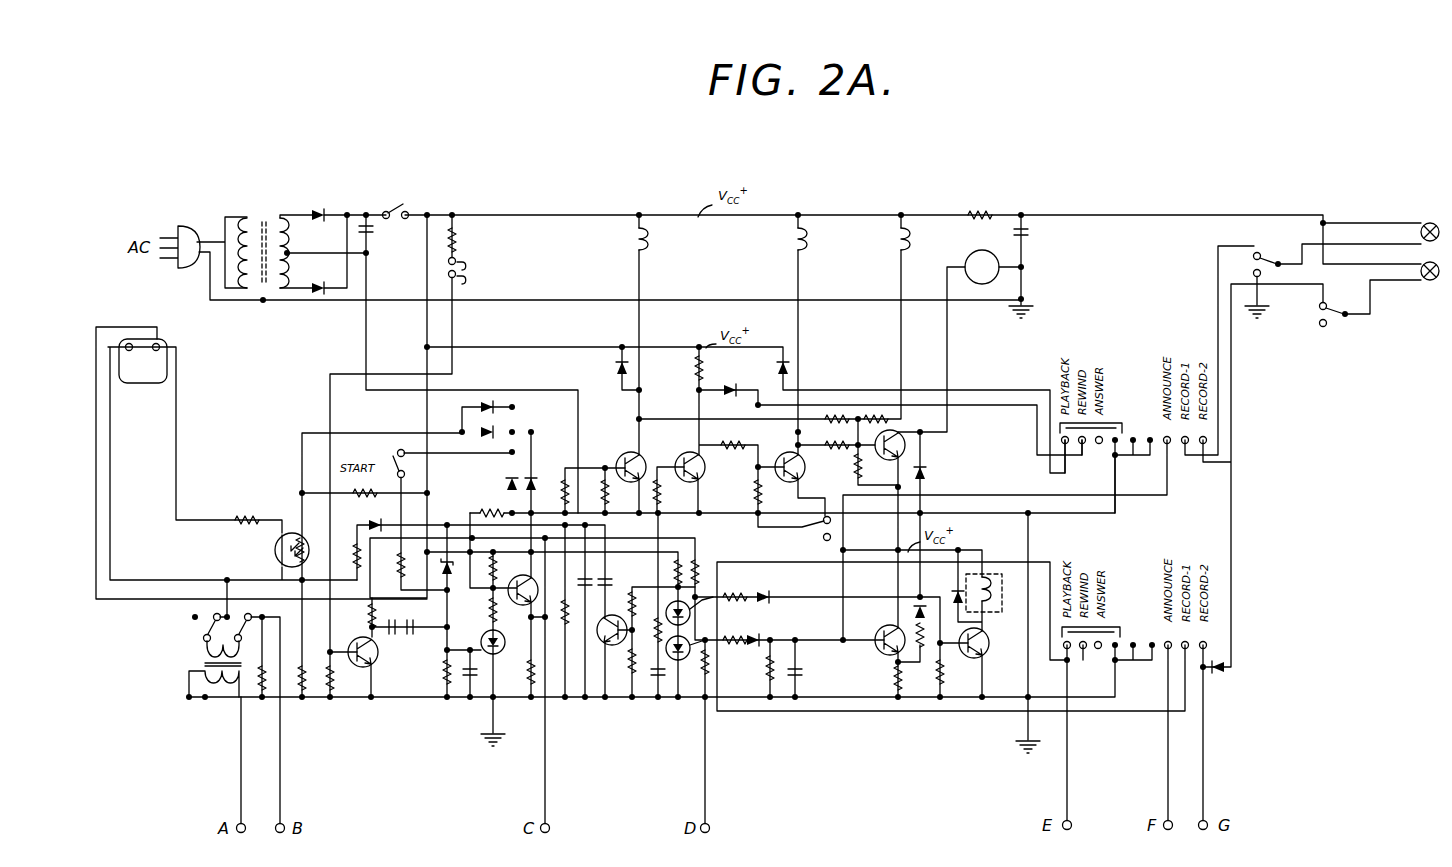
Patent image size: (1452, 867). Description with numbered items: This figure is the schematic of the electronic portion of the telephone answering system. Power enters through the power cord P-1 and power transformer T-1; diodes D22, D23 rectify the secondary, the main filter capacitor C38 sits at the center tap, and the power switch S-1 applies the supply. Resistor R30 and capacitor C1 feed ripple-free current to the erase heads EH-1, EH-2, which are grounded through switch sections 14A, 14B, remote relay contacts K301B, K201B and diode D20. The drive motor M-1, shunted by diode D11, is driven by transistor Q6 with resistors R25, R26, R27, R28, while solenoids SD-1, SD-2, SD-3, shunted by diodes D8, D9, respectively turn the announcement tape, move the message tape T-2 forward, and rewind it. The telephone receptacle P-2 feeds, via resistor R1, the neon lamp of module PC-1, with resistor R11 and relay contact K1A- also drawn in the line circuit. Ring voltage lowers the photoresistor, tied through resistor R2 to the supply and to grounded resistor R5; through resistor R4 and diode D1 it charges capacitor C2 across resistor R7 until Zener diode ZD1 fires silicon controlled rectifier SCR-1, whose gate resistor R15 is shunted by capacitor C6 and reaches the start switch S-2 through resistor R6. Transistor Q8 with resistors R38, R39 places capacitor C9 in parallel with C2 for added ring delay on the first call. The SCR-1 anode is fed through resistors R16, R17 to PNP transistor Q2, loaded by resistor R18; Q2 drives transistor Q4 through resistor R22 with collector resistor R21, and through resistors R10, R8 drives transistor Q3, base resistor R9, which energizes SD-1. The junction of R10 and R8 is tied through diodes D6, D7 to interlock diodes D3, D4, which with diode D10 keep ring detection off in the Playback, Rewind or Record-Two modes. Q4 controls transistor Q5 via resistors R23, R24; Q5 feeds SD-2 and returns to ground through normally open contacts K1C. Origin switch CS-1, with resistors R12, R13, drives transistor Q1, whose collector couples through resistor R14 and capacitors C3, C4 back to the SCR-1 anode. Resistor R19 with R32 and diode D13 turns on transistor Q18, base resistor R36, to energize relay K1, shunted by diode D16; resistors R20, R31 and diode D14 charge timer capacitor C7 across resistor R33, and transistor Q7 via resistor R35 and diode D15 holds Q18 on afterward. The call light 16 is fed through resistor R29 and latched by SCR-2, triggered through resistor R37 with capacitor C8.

The power cord P-1 is at (204, 230).
The power transformer T-1 is at (263, 243).
The diode D22 is at (316, 204).
The diode D23 is at (313, 280).
The power switch S-1 is at (395, 200).
The filter capacitor C38 is at (372, 234).
The resistor R12 is at (458, 240).
The switch CS-1 is at (473, 268).
The control solenoid SD-1 is at (647, 241).
The solenoid SD-2 is at (806, 241).
The rewind solenoid SD-3 is at (909, 241).
The resistor R30 is at (978, 212).
The filter capacitor C1 is at (1030, 239).
The drive motor M-1 is at (982, 267).
The remote control relay contact K301B is at (1279, 252).
The remote control relay contact K201B is at (1345, 324).
The erase head EH-1 is at (1423, 222).
The erase head EH-2 is at (1427, 281).
The telephone receptacle P-2 is at (132, 339).
The diode D8 is at (615, 378).
The resistor R21 is at (693, 378).
The diode D10 is at (725, 383).
The diode D9 is at (778, 373).
The resistor R28 is at (874, 412).
The resistor R25 is at (837, 423).
The resistor R26 is at (837, 448).
The resistor R27 is at (852, 475).
The PNP transistor Q6 is at (887, 455).
The diode D11 is at (928, 473).
The transistor Q3 is at (626, 454).
The NPN transistor Q4 is at (682, 462).
The NPN transistor Q5 is at (796, 477).
The resistor R23 is at (738, 450).
The resistor R24 is at (752, 492).
The resistor R22 is at (661, 495).
The resistor R9 is at (608, 495).
The resistor R8 is at (561, 495).
The resistor R10 is at (496, 511).
The diode D6 is at (507, 481).
The diode D7 is at (536, 483).
The interlock diode D3 is at (478, 405).
The interlock diode D4 is at (498, 429).
The start switch S-2 is at (391, 454).
The resistor R2 is at (355, 493).
The diode D1 is at (384, 520).
The resistor R4 is at (350, 554).
The resistor R1 is at (249, 518).
The lamp/photoresistor module PC-1 is at (275, 551).
The relay contact K1A- is at (242, 614).
The message tape T-2 is at (203, 650).
The resistor R11 is at (259, 694).
The resistor R5 is at (306, 698).
The resistor R13 is at (334, 682).
The NPN transistor Q1 is at (369, 664).
The resistor R14 is at (366, 618).
The coupling capacitor C3 is at (408, 634).
The coupling capacitor C4 is at (412, 617).
The resistor R15 is at (441, 660).
The resistor R6 is at (396, 567).
The Zener diode ZD1 is at (443, 570).
The resistor R16 is at (488, 610).
The resistor R17 is at (498, 568).
The PNP transistor Q2 is at (520, 592).
The silicon controlled rectifier SCR-1 is at (500, 648).
The resistor R18 is at (528, 672).
The capacitor C6 is at (468, 698).
The capacitor C2 is at (580, 590).
The resistor R7 is at (568, 620).
The capacitor C9 is at (609, 579).
The NPN transistor Q8 is at (612, 638).
The resistor R38 is at (653, 630).
The resistor R37 is at (643, 657).
The resistor R39 is at (632, 686).
The capacitor C8 is at (658, 686).
The resistor R29 is at (672, 565).
The resistor R19 is at (702, 564).
The call light 16 is at (704, 602).
The silicon controlled rectifier SCR-2 is at (690, 656).
The resistor R32 is at (737, 607).
The diode D13 is at (767, 594).
The resistor R20 is at (735, 632).
The diode D14 is at (759, 636).
The resistor R31 is at (724, 662).
The resistor R33 is at (765, 674).
The timer capacitor C7 is at (803, 676).
The relay contacts K1C is at (806, 535).
The relay K1 is at (992, 575).
The diode D16 is at (952, 589).
The diode D15 is at (914, 608).
The resistor R35 is at (925, 648).
The transistor Q7 is at (878, 644).
The NPN transistor Q18 is at (990, 650).
The resistor R36 is at (944, 672).
The switch section 14A is at (1132, 419).
The switch section 14B is at (1133, 623).
The diode D20 is at (1229, 679).